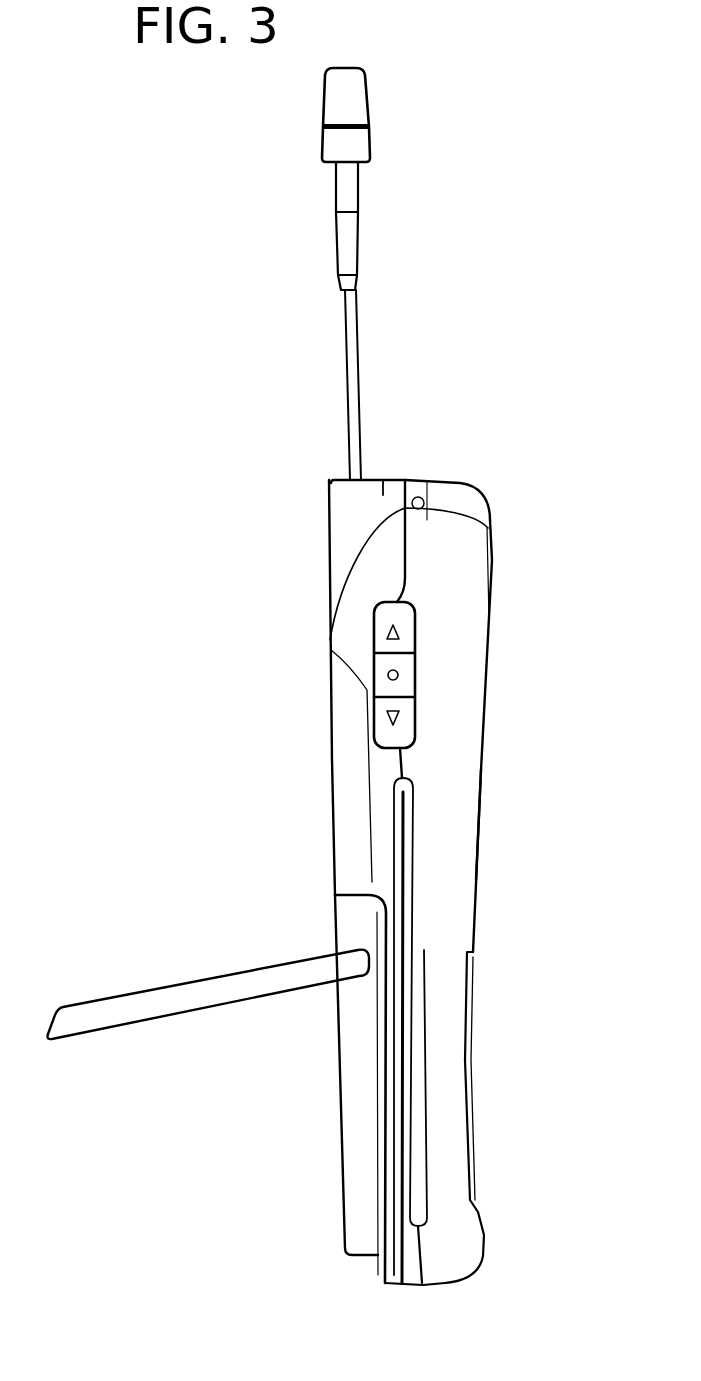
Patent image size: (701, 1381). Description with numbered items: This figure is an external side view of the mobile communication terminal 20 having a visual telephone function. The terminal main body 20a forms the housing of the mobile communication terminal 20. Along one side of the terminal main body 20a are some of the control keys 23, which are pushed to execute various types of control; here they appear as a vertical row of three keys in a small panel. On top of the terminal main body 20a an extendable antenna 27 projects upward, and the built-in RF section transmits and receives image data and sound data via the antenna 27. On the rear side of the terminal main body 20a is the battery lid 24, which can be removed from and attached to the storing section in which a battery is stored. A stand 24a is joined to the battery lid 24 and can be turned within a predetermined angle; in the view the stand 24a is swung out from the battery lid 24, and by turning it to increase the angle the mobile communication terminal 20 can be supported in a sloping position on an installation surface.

The mobile communication terminal 20 is at (485, 430).
The terminal main body 20a is at (479, 784).
The control key 23 is at (374, 632).
The battery lid 24 is at (350, 1140).
The stand 24a is at (184, 995).
The extendable antenna 27 is at (358, 146).